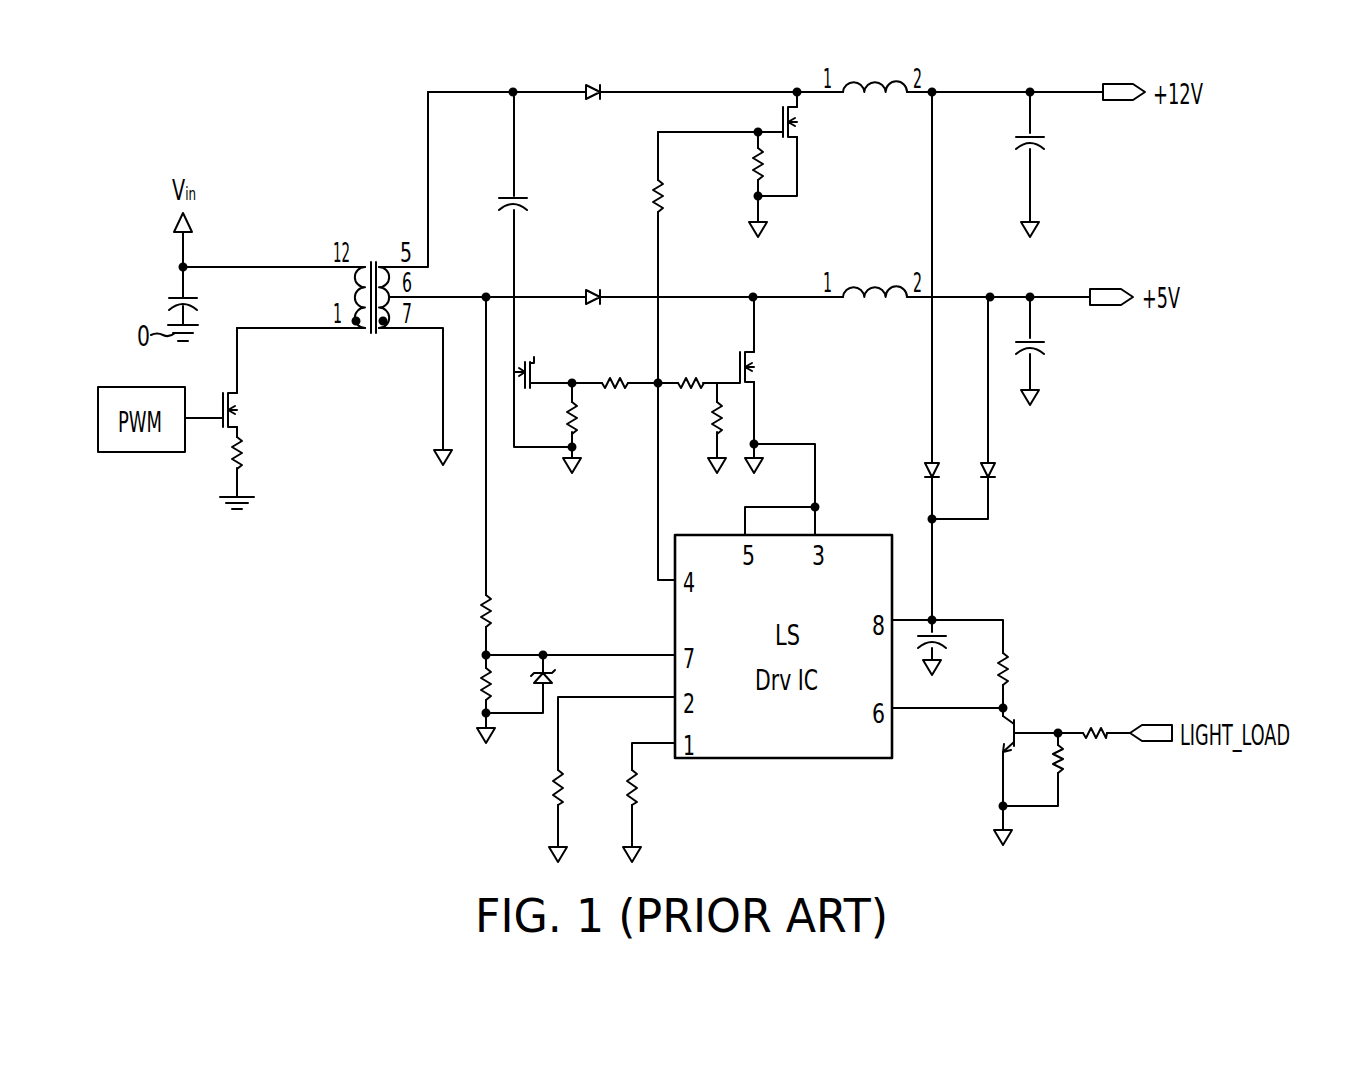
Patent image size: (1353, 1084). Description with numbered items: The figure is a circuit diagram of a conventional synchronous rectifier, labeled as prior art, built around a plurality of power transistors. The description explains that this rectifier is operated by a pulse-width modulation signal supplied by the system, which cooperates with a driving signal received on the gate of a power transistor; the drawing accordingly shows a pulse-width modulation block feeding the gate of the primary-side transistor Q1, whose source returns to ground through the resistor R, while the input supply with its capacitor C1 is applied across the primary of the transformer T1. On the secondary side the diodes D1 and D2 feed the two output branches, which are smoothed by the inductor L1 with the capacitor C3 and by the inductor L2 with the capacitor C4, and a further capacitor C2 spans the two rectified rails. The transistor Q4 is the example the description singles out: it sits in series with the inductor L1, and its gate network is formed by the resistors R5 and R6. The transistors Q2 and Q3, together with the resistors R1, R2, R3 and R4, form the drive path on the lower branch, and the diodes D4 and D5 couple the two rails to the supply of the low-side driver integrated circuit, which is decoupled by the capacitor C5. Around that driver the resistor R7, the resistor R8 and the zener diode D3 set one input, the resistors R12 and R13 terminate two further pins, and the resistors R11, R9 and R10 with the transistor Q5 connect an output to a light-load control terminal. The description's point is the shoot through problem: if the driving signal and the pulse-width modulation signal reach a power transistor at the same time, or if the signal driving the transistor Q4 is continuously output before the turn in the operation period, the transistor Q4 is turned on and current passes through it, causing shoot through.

The input capacitor C1 is at (200, 298).
The capacitor C2 is at (527, 200).
The +12V output capacitor C3 is at (1049, 134).
The +5V output capacitor C4 is at (1039, 339).
The capacitor C5 is at (938, 637).
The rectifier diode D1 is at (596, 100).
The rectifier diode D2 is at (596, 290).
The zener diode D3 is at (550, 678).
The diode D4 is at (924, 471).
The diode D5 is at (996, 470).
The output inductor L1 is at (875, 92).
The output inductor L2 is at (865, 287).
The transformer T1 is at (375, 297).
The switching transistor Q1 is at (236, 408).
The transistor Q2 is at (530, 362).
The transistor Q3 is at (757, 367).
The transistor Q4 is at (800, 124).
The transistor Q5 is at (1010, 722).
The resistor R is at (241, 457).
The resistor R1 is at (578, 418).
The resistor R2 is at (615, 380).
The resistor R3 is at (690, 380).
The resistor R4 is at (712, 420).
The resistor R5 is at (665, 197).
The resistor R6 is at (752, 166).
The resistor R7 is at (492, 610).
The resistor R8 is at (481, 685).
The resistor R9 is at (1064, 760).
The resistor R10 is at (1097, 730).
The resistor R11 is at (1009, 668).
The resistor R12 is at (554, 789).
The resistor R13 is at (638, 788).